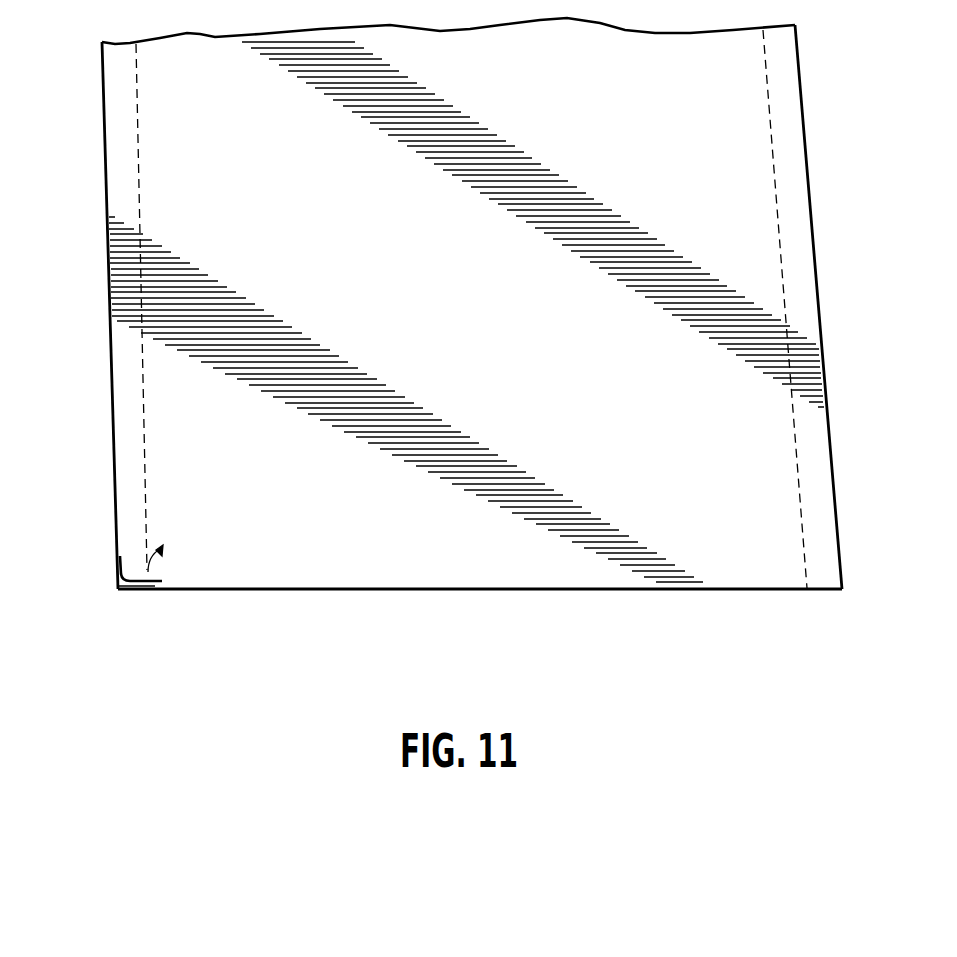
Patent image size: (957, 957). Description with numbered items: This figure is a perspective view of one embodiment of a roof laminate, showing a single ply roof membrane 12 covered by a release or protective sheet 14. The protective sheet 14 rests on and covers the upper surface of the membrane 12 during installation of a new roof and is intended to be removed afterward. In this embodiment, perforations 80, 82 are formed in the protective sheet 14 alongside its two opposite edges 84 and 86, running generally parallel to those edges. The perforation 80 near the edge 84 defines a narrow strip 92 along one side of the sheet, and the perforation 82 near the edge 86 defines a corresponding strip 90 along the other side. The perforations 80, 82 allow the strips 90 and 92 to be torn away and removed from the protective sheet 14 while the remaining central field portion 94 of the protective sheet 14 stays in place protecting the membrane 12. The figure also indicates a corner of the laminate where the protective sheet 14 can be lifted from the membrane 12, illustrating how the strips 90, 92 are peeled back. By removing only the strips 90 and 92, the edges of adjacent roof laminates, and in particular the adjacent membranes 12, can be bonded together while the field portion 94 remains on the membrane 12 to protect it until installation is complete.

The roof membrane 12 is at (139, 591).
The protective sheet 14 is at (137, 572).
The perforation 80 is at (150, 453).
The perforation 82 is at (773, 183).
The edge 84 is at (113, 406).
The edge 86 is at (833, 468).
The strip 90 is at (783, 115).
The strip 92 is at (130, 500).
The field portion 94 is at (421, 290).